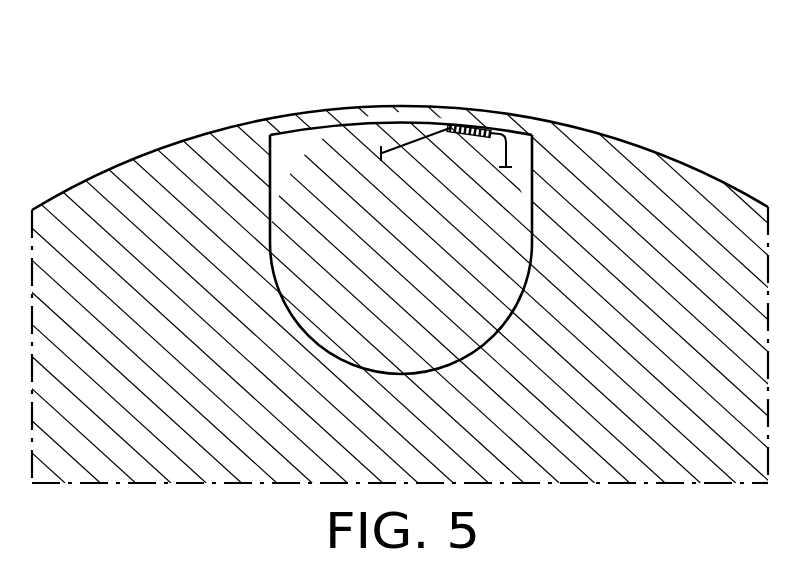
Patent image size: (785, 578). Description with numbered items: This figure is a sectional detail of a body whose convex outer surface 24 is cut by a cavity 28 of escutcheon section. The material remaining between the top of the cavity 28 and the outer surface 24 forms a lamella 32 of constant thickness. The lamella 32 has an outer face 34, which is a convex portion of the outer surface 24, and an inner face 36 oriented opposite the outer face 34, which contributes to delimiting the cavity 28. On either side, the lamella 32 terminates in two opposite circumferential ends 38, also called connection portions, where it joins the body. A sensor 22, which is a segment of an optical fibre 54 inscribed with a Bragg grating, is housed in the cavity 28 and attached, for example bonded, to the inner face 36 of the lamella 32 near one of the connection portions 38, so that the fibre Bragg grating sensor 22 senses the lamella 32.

The sensor 22 is at (467, 133).
The outer surface 24 is at (605, 135).
The cavity 28 is at (495, 223).
The lamella 32 is at (398, 107).
The outer face 34 is at (400, 118).
The inner face 36 is at (350, 125).
The circumferential ends 38 is at (277, 122).
The optical fibre 54 is at (407, 147).